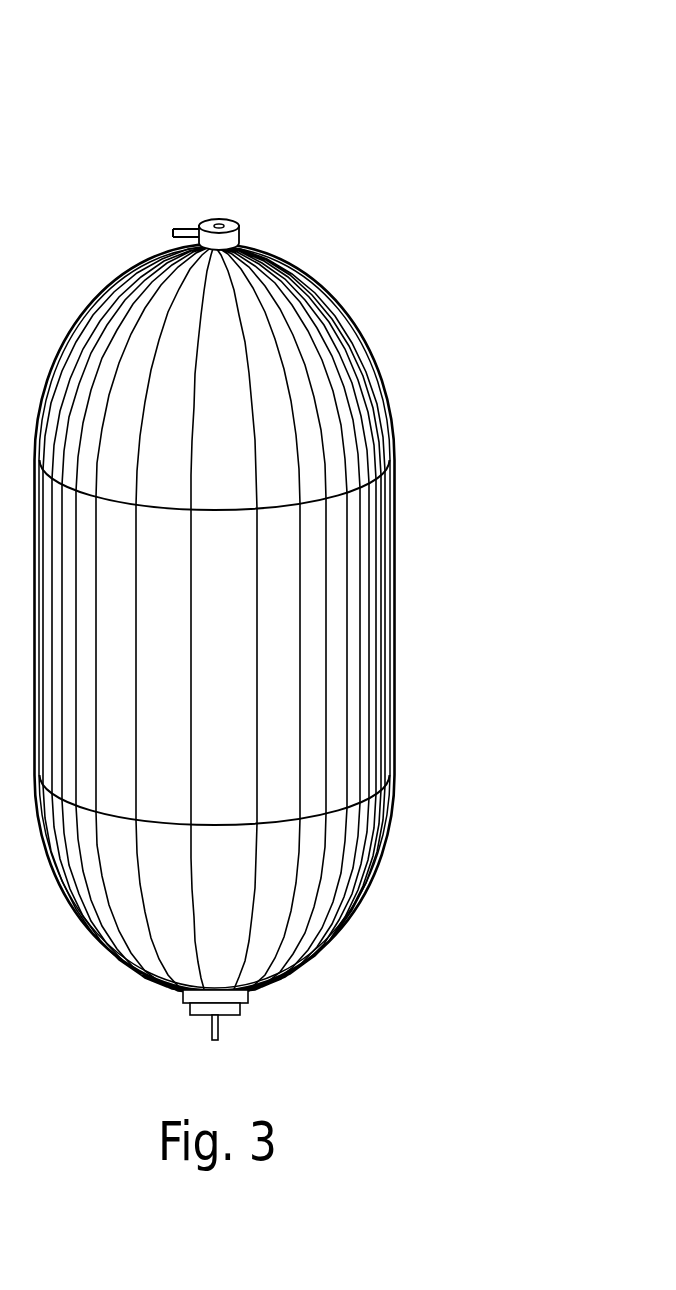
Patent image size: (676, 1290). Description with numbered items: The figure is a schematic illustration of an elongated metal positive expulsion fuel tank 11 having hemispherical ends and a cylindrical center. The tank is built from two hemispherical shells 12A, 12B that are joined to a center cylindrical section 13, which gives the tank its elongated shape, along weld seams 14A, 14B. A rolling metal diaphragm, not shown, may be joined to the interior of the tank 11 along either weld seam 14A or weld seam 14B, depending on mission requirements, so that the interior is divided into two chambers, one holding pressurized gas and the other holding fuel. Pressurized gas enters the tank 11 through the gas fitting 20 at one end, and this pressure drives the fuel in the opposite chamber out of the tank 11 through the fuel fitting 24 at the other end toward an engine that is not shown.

The positive expulsion fuel tank 11 is at (450, 115).
The gas fitting 20 is at (218, 218).
The fuel fitting 24 is at (205, 1025).
The hemispherical shell 12A is at (250, 315).
The hemispherical shell 12B is at (270, 903).
The center cylindrical section 13 is at (225, 660).
The weld seam 14A is at (280, 505).
The weld seam 14B is at (275, 820).